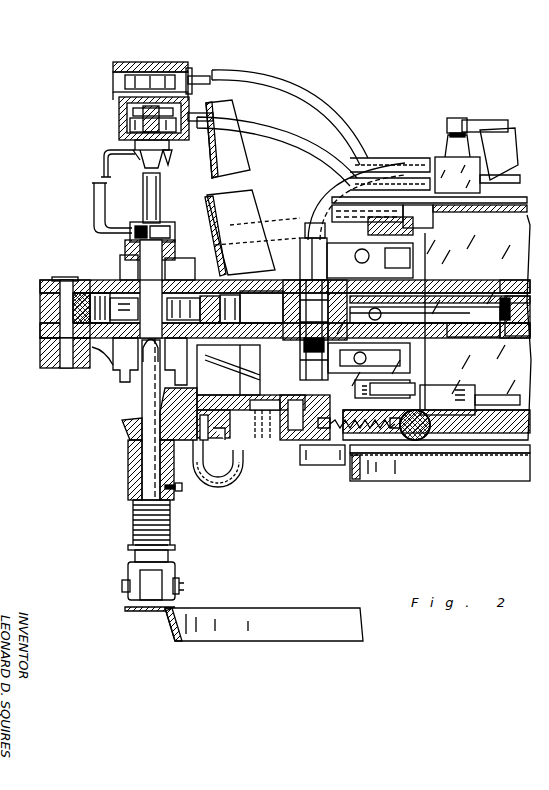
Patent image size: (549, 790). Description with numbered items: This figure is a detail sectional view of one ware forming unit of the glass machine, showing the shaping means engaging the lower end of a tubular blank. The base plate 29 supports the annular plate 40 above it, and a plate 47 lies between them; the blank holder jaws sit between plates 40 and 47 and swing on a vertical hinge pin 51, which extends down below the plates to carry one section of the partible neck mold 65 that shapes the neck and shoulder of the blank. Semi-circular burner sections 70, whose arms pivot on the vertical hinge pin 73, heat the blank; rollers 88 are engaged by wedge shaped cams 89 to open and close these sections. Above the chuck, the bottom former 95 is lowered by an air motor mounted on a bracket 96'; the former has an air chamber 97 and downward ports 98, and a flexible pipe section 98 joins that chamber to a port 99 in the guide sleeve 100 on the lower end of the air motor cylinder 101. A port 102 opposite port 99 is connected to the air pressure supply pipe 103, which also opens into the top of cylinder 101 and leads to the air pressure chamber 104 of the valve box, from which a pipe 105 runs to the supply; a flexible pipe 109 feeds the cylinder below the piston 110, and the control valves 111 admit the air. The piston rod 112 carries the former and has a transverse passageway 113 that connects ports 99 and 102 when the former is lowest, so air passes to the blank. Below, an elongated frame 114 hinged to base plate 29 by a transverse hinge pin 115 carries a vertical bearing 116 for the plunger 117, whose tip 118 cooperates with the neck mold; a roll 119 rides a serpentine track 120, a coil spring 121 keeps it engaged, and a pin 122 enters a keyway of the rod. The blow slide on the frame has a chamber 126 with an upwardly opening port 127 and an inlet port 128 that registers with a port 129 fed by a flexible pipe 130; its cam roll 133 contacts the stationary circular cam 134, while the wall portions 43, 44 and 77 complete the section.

The base plate 29 is at (486, 432).
The annular plate 40 is at (40, 289).
The housing wall 43 is at (524, 288).
The housing wall 44 is at (524, 328).
The plate 47 is at (42, 328).
The hinge pin 51 is at (60, 268).
The partible neck mold 65 is at (110, 362).
The burner section 70 is at (128, 268).
The vertical hinge pin 73 is at (325, 385).
The conduit fitting 77 is at (368, 162).
The roller 88 is at (420, 375).
The wedge shaped cam 89 is at (475, 385).
The bottom former 95 is at (125, 249).
The bracket 96' is at (252, 188).
The air chamber 97 is at (170, 232).
The ports / flexible pipe section 98 is at (93, 193).
The port 99 is at (143, 160).
The guide sleeve 100 is at (104, 158).
The air motor cylinder 101 is at (119, 130).
The port 102 is at (168, 160).
The air pressure supply pipe 103 is at (288, 82).
The air pressure chamber 104 is at (440, 157).
The pipe 105 is at (520, 170).
The flexible pipe 109 is at (300, 130).
The piston 110 is at (120, 112).
The air pressure control valve 111 is at (462, 115).
The piston rod 112 is at (162, 198).
The transverse passageway 113 is at (126, 174).
The elongated frame 114 is at (124, 447).
The transverse hinge pin 115 is at (404, 433).
The vertical bearing 116 is at (132, 487).
The plunger 117 is at (140, 470).
The tip 118 is at (145, 385).
The roll 119 is at (138, 580).
The serpentine track 120 is at (158, 615).
The coil spring 121 is at (133, 515).
The pin 122 is at (182, 490).
The chamber 126 is at (268, 425).
The upwardly opening port 127 is at (228, 370).
The inlet port 128 is at (298, 432).
The port 129 is at (210, 440).
The flexible pipe 130 is at (250, 486).
The cam roll 133 is at (305, 468).
The stationary circular cam 134 is at (368, 468).